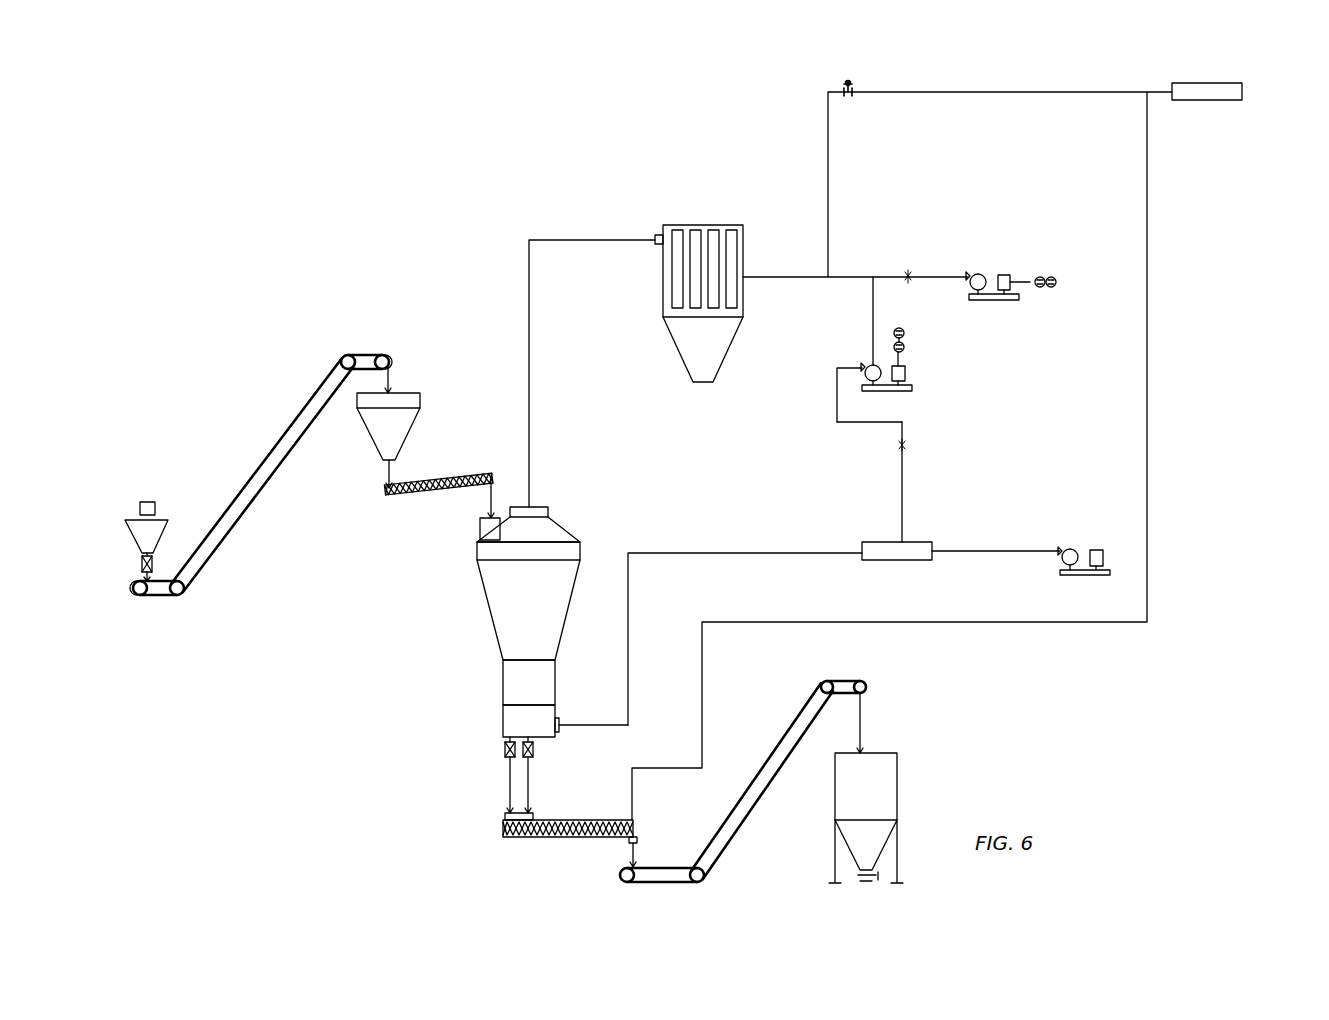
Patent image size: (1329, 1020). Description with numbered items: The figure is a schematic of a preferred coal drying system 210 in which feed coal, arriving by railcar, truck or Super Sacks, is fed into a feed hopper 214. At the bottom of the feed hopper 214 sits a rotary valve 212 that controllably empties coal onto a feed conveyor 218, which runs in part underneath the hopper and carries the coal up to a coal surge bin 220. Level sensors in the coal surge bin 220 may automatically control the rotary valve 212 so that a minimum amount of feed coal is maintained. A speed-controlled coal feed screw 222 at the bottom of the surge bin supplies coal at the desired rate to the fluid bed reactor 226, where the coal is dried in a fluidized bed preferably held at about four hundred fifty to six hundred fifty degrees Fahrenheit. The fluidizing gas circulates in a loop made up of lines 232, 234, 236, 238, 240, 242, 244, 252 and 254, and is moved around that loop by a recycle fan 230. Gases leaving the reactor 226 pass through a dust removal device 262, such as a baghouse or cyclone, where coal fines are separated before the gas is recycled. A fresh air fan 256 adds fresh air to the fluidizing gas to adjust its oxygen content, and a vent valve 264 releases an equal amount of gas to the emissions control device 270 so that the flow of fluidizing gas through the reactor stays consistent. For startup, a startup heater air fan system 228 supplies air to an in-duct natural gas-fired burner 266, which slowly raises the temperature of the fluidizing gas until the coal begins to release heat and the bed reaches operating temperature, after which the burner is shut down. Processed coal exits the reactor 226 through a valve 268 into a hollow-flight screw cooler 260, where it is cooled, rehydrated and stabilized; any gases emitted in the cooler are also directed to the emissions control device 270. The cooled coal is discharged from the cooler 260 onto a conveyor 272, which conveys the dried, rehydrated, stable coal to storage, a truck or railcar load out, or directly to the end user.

The coal drying system 210 is at (679, 164).
The rotary valve 212 is at (140, 560).
The feed hopper 214 is at (132, 540).
The feed conveyor 218 is at (297, 412).
The coal surge bin 220 is at (422, 405).
The coal feed screw 222 is at (422, 477).
The fluid bed reactor 226 is at (567, 528).
The startup heater air fan system 228 is at (1082, 538).
The recycle fan 230 is at (908, 368).
The line 232 is at (835, 393).
The line 234 is at (892, 415).
The line 236 is at (907, 473).
The line 238 is at (762, 553).
The line 240 is at (632, 633).
The line 242 is at (567, 722).
The line 244 is at (578, 237).
The line 252 is at (772, 275).
The line 254 is at (868, 317).
The fresh air fan 256 is at (1008, 273).
The cooler 260 is at (557, 817).
The dust removal device 262 is at (708, 223).
The vent valve 264 is at (860, 73).
The in-duct natural gas-fired burner 266 is at (507, 745).
The valve 268 is at (533, 747).
The emissions control device 270 is at (1210, 77).
The conveyor 272 is at (787, 727).